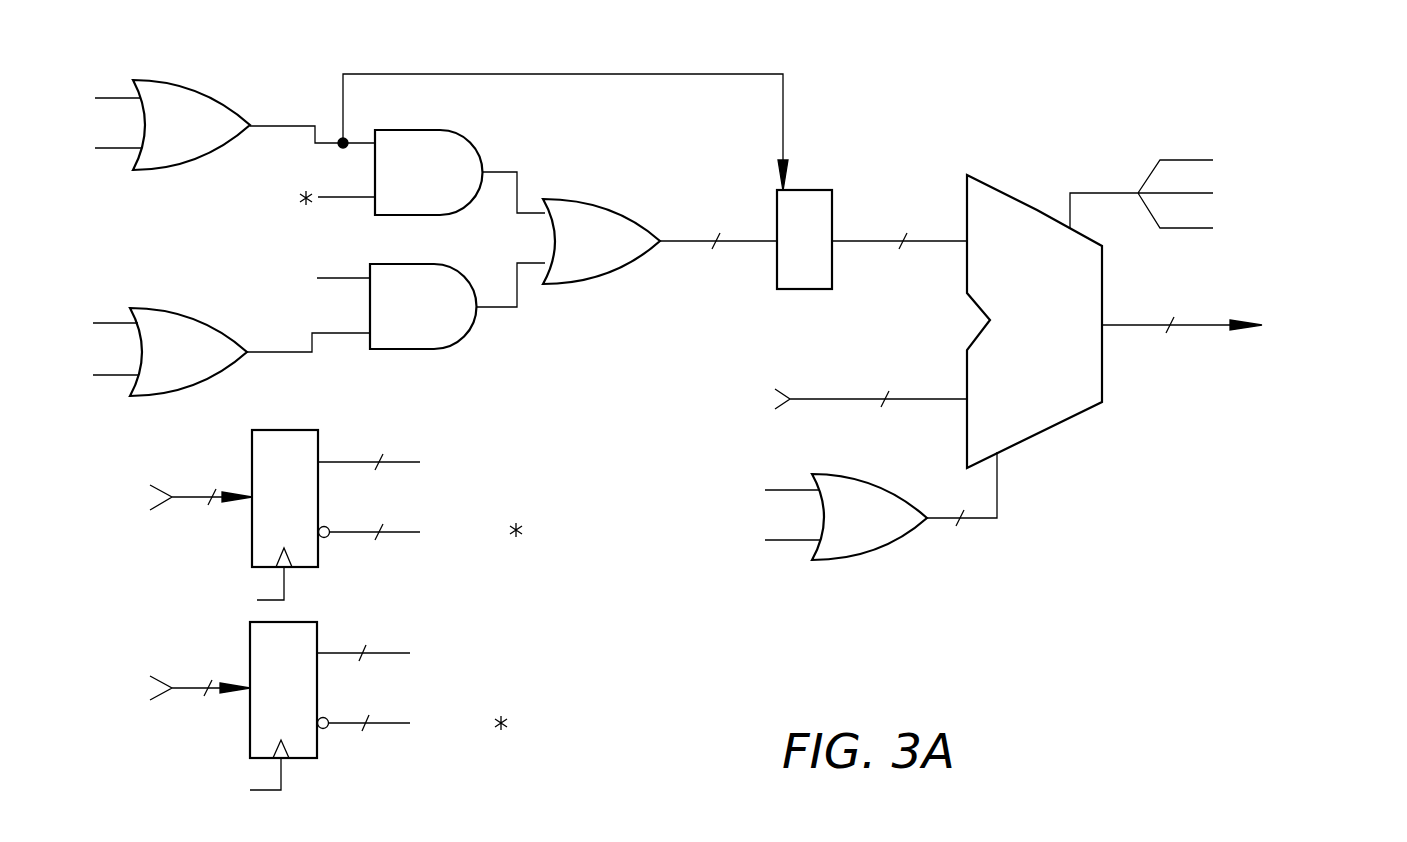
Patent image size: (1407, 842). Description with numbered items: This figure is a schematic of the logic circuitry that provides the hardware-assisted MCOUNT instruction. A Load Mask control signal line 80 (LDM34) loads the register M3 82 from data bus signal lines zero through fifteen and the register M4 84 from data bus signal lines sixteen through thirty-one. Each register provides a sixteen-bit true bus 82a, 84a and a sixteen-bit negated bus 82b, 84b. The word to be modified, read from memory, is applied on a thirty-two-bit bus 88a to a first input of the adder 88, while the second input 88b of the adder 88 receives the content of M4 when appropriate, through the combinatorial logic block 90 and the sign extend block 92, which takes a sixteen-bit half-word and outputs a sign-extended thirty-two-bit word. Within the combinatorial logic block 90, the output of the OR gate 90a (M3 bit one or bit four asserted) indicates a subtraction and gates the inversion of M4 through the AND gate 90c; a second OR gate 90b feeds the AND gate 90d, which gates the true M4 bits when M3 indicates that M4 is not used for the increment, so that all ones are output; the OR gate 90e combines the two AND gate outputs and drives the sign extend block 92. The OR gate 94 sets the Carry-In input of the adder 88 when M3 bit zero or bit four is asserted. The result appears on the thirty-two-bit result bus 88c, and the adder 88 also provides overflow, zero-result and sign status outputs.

The Load Mask 3&4 (LDM34) control signal line 80 is at (284, 583).
The register M3 82 is at (290, 430).
The 16-bit true bus of register M3 82a is at (402, 462).
The 16-bit negated bus of register M3 82b is at (402, 532).
The register M4 84 is at (172, 690).
The 16-bit true bus of register M4 84a is at (345, 278).
The 16-bit negated bus of register M4 84b is at (340, 200).
The adder (ADD) 88 is at (1047, 430).
The 32-bit bus 88a is at (843, 399).
The second input of the adder 88b is at (857, 243).
The 32-bit result bus 88c is at (1207, 325).
The combinatorial logic block 90 is at (477, 131).
The 2OR gate 90a is at (178, 80).
The OR gate 90b is at (163, 308).
The AND gate 90c is at (440, 216).
The AND gate 90d is at (450, 349).
The OR gate 90e is at (590, 199).
The sign extend (SE) block 92 is at (800, 190).
The OR gate 94 is at (872, 560).